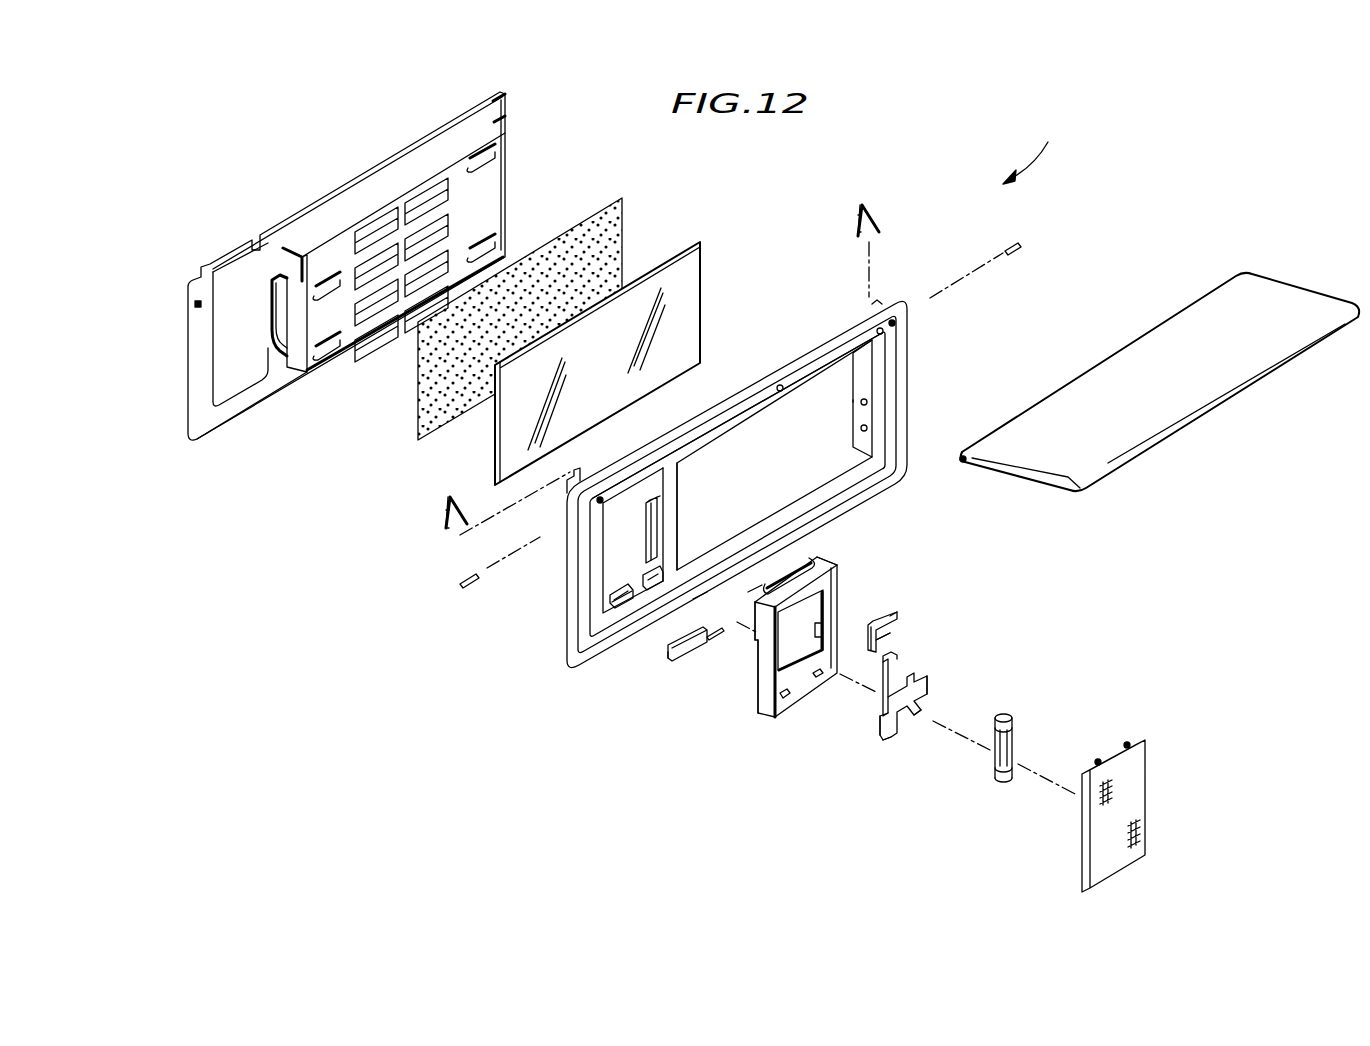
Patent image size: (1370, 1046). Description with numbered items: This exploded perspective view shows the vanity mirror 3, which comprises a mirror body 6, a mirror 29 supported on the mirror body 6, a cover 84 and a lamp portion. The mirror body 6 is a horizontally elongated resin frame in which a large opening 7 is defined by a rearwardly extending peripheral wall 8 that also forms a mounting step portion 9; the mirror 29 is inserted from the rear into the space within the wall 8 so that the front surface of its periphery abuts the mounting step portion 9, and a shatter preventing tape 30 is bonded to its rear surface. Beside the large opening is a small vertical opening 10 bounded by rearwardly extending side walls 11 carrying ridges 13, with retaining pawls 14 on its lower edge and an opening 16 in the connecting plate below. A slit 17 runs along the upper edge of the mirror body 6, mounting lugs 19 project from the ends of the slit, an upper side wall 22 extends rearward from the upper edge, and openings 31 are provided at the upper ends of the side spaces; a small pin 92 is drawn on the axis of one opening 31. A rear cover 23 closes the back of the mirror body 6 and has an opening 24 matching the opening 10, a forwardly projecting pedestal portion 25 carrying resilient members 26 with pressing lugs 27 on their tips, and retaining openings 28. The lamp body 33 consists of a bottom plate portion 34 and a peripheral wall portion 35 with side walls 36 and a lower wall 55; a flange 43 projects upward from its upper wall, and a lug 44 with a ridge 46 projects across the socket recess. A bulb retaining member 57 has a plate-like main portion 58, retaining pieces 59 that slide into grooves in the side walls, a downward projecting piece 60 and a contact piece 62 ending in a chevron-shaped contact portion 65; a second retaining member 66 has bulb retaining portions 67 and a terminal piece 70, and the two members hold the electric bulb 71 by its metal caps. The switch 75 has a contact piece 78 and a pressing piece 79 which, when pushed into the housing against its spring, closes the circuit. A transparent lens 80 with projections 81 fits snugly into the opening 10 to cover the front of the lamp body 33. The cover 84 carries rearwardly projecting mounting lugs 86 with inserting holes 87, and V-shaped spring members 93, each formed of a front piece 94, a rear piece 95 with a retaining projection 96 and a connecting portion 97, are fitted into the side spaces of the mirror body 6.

The vanity mirror 3 is at (1077, 143).
The mirror body 6 is at (740, 450).
The opening 7 is at (866, 428).
The peripheral wall 8 is at (855, 400).
The mounting step portion 9 is at (866, 402).
The opening 10 is at (664, 480).
The side wall 11 is at (658, 532).
The ridge 13 is at (660, 500).
The retaining pawl 14 is at (645, 578).
The opening 16 is at (612, 594).
The slit 17 is at (780, 385).
The mounting lug 19 is at (876, 330).
The upper side wall 22 is at (742, 378).
The rear cover 23 is at (346, 249).
The opening 24 is at (270, 305).
The pedestal portion 25 is at (430, 160).
The resilient member 26 is at (478, 140).
The pressing lug 27 is at (497, 160).
The retaining opening 28 is at (505, 118).
The mirror 29 is at (703, 282).
The shatter preventing tape 30 is at (626, 215).
The opening 31 is at (880, 298).
The lamp body 33 is at (789, 649).
The bottom plate portion 34 is at (760, 660).
The peripheral wall portion 35 is at (838, 610).
The side wall 36 is at (836, 590).
The flange 43 is at (813, 632).
The lug 44 is at (750, 596).
The ridge 46 is at (805, 572).
The lower wall 55 is at (816, 680).
The electric bulb retaining member 57 is at (894, 718).
The main portion 58 is at (887, 740).
The retaining piece 59 is at (926, 696).
The projecting piece 60 is at (915, 720).
The contact piece 62 is at (870, 682).
The contact portion 65 is at (895, 656).
The electric bulb retaining member 66 is at (898, 628).
The bulb retaining portion 67 is at (892, 641).
The terminal piece 70 is at (926, 609).
The electric bulb 71 is at (1014, 740).
The switch 75 is at (678, 665).
The contact piece 78 is at (714, 642).
The pressing piece 79 is at (668, 652).
The lens 80 is at (1152, 789).
The projection 81 is at (1098, 758).
The cover 84 is at (1132, 381).
The mounting lug 86 is at (963, 464).
The inserting hole 87 is at (960, 464).
The pin 92 is at (1018, 252).
The spring member 93 is at (870, 208).
The front piece 94 is at (880, 222).
The rear piece 95 is at (858, 216).
The retaining projection 96 is at (858, 232).
The connecting portion 97 is at (860, 203).